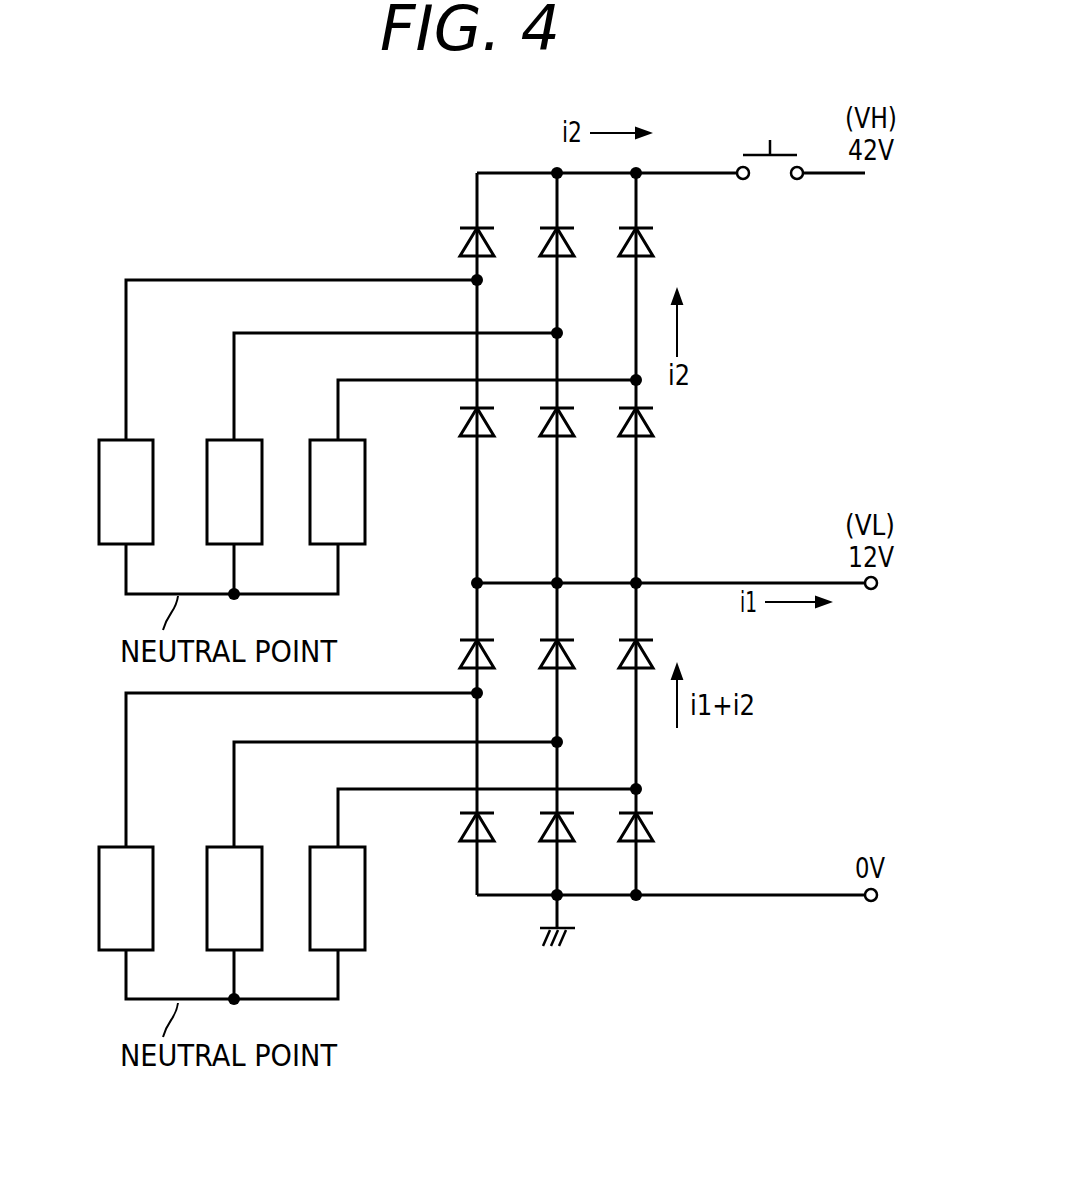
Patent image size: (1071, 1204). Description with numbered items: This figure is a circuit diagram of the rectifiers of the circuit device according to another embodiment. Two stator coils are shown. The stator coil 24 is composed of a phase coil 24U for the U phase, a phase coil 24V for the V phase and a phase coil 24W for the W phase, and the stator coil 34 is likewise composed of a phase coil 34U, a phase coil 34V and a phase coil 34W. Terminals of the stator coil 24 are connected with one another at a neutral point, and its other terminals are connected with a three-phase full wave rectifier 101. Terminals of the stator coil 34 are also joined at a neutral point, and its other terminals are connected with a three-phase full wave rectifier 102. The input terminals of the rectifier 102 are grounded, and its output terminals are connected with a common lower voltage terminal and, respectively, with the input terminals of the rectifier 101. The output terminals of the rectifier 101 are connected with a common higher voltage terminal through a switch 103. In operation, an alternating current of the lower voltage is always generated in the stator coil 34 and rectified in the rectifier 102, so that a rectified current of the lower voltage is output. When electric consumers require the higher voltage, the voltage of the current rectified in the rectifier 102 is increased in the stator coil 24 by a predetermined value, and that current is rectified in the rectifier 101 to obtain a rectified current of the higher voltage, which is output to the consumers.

The stator coil 24 is at (338, 437).
The phase coil for a U phase 24U is at (143, 447).
The phase coil for a V phase 24V is at (252, 447).
The phase coil for a W phase 24W is at (357, 468).
The stator coil 34 is at (338, 846).
The phase coil for the U phase 34U is at (143, 855).
The phase coil for the V phase 34V is at (252, 855).
The phase coil for the W phase 34W is at (357, 866).
The three-phase full wave rectifier 101 is at (658, 454).
The three-phase full wave rectifier 102 is at (663, 792).
The switch 103 is at (770, 140).